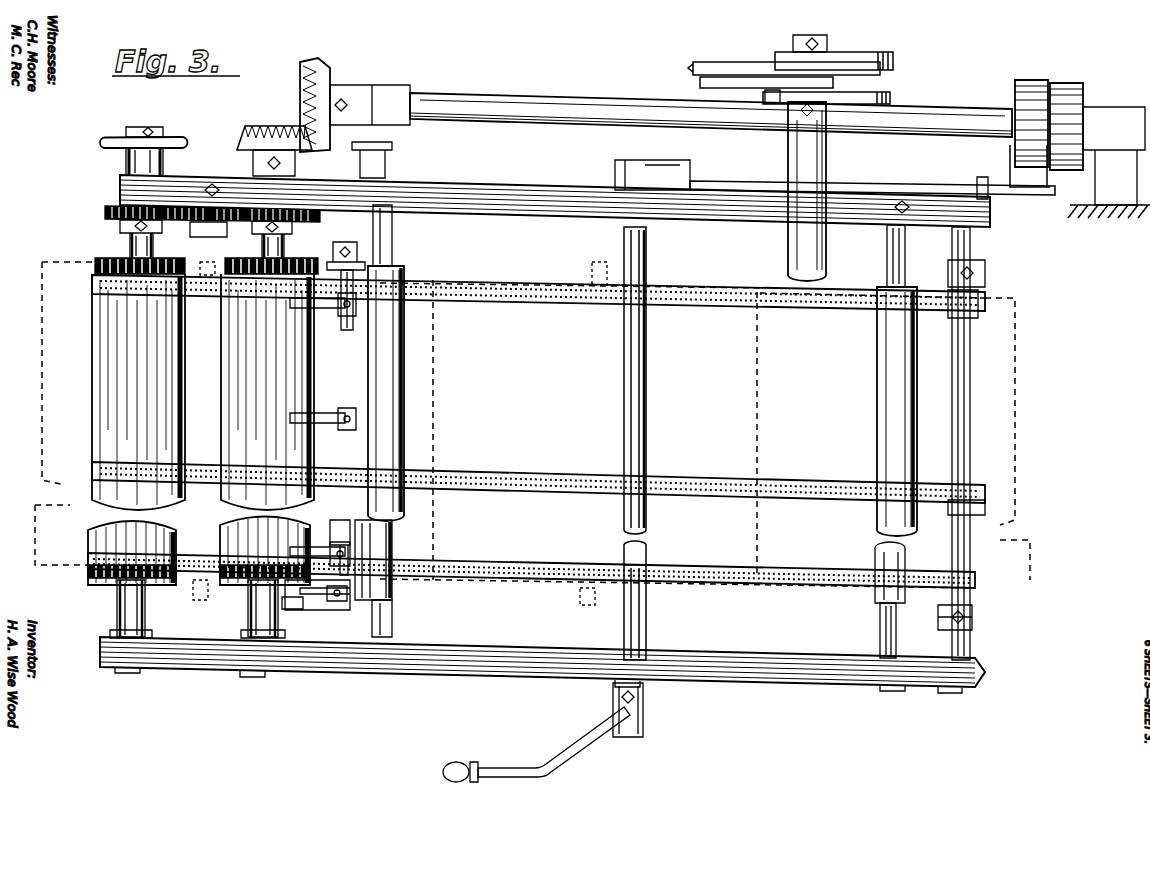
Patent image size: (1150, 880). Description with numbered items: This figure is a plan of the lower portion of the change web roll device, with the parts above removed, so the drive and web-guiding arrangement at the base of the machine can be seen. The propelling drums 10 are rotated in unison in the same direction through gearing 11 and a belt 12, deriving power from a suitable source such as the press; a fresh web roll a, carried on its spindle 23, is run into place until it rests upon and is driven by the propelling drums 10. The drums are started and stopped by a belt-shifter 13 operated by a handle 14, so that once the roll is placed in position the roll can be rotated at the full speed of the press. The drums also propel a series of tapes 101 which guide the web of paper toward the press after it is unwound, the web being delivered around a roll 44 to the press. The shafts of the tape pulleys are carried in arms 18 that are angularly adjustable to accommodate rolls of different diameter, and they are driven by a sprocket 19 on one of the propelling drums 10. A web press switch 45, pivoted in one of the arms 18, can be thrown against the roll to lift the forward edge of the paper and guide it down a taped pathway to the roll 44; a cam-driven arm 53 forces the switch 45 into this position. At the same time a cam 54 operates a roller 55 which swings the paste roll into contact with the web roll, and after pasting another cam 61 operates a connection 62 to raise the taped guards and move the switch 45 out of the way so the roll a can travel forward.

The web roll a is at (40, 430).
The propelling drums 10 is at (115, 388).
The gearing 11 is at (298, 120).
The belt 12 is at (1036, 78).
The belt-shifter 13 is at (890, 182).
The handle 14 is at (508, 766).
The arms 18 is at (334, 262).
The sprocket 19 is at (112, 148).
The spindle 23 is at (592, 268).
The roll 44 is at (380, 395).
The web press switch 45 is at (290, 302).
The arm 53 is at (320, 600).
The cam 54 is at (885, 98).
The roller 55 is at (772, 105).
The cam 61 is at (895, 48).
The connection 62 is at (716, 70).
The tapes 101 is at (562, 300).